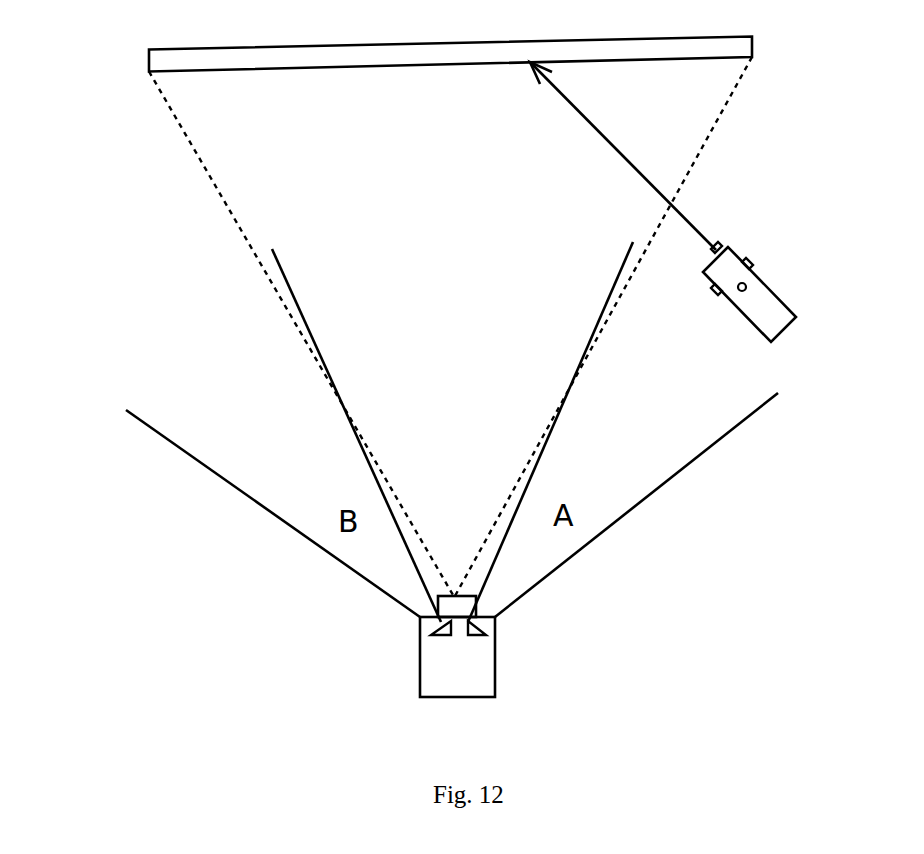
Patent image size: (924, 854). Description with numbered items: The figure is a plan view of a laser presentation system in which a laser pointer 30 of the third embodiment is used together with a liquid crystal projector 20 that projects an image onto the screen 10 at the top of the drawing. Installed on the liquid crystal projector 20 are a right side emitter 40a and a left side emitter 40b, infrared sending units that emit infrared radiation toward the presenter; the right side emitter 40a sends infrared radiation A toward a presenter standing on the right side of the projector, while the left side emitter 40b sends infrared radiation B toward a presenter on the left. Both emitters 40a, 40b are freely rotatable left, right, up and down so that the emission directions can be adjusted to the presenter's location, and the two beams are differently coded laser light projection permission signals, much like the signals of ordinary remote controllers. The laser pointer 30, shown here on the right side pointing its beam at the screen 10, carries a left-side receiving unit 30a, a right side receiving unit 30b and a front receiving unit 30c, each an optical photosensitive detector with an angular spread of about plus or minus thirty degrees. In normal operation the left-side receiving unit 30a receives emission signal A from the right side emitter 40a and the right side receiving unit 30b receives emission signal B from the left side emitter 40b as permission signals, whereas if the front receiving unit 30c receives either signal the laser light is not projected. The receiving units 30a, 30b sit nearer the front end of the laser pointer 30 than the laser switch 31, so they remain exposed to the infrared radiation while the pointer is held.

The screen 10 is at (362, 69).
The liquid crystal projector 20 is at (477, 678).
The laser pointer 30 is at (772, 312).
The left-side receiving unit 30a is at (713, 293).
The right side receiving unit 30b is at (748, 258).
The front receiving unit 30c is at (716, 249).
The laser switch 31 is at (746, 283).
The right side emitter 40a is at (480, 637).
The left side emitter 40b is at (444, 637).